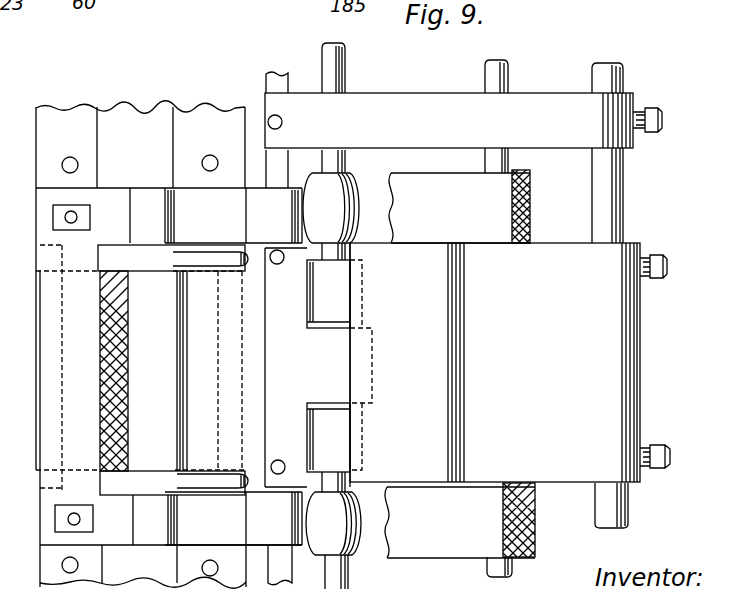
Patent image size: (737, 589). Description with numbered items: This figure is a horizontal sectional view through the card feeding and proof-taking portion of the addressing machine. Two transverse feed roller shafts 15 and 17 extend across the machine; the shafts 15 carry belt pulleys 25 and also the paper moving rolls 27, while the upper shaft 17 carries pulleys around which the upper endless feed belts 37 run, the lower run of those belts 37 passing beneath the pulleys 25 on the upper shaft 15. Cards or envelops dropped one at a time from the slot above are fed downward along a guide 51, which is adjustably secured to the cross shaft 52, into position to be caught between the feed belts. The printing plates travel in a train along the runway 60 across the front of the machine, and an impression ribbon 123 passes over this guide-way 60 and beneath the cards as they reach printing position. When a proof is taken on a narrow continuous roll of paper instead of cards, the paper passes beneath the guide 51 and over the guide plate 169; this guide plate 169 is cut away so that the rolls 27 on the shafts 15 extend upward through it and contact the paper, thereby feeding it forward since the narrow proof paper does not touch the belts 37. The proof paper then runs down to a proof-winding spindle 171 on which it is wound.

The feed roller shafts 15 is at (343, 62).
The feed roller shafts 17 is at (517, 62).
The belt pulleys 25 is at (352, 190).
The paper moving rolls 27 is at (338, 275).
The feed belts 37 is at (538, 182).
The guide 51 is at (607, 337).
The cross shaft 52 is at (623, 180).
The runway 60 is at (135, 120).
The impression ribbon 123 is at (115, 313).
The guide plate 169 is at (337, 348).
The proof-winding spindle 171 is at (190, 283).